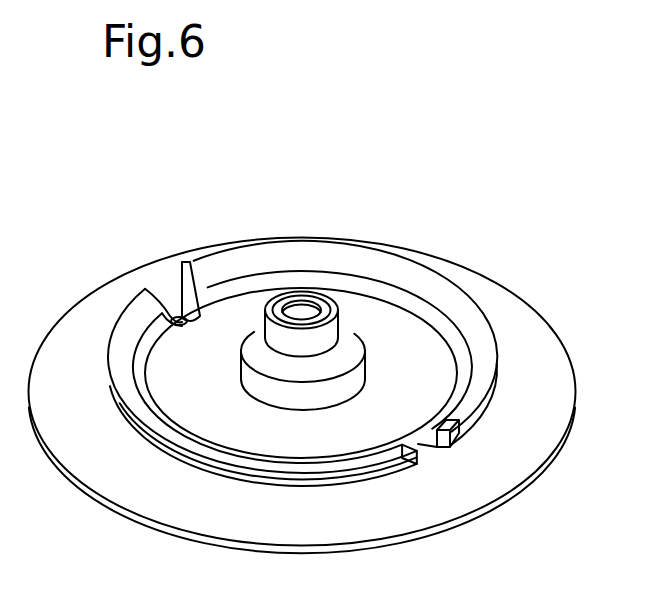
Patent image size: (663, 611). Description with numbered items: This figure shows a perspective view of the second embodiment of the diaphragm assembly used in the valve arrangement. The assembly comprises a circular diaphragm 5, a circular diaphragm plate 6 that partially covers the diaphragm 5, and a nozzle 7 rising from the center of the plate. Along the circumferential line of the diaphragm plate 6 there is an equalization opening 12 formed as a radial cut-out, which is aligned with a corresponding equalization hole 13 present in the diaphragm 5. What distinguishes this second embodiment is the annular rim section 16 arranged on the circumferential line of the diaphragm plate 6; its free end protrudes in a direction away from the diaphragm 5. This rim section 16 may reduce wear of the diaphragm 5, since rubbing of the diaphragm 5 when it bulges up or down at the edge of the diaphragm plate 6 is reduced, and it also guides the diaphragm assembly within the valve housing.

The diaphragm 5 is at (65, 365).
The diaphragm plate 6 is at (288, 430).
The nozzle 7 is at (348, 352).
The equalization opening 12 is at (163, 298).
The equalization hole 13 is at (181, 316).
The annular rim section 16 is at (465, 327).